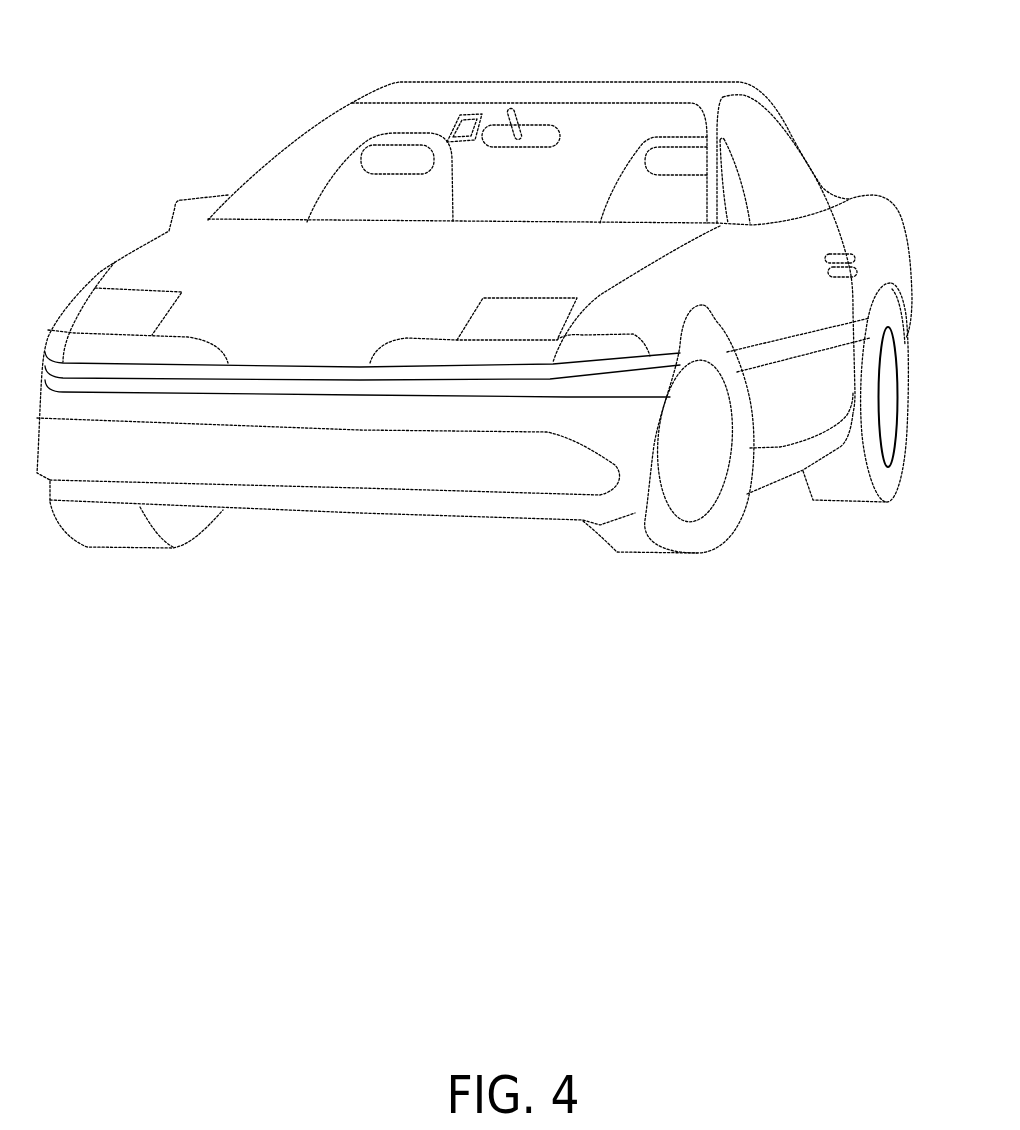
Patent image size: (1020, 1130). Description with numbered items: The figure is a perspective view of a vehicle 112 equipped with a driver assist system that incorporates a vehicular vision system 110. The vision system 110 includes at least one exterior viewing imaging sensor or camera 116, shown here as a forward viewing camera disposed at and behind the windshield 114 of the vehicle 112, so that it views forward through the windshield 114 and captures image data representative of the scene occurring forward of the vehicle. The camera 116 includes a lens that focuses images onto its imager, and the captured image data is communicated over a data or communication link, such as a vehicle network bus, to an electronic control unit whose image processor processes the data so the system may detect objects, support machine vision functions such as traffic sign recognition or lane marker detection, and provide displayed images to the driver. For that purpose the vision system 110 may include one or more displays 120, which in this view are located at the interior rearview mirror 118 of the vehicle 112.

The vision system 110 is at (452, 105).
The vehicle 112 is at (380, 65).
The windshield 114 is at (302, 148).
The exterior viewing imaging sensor or camera 116 is at (480, 110).
The rearview mirror 118 is at (556, 127).
The display 120 is at (547, 150).